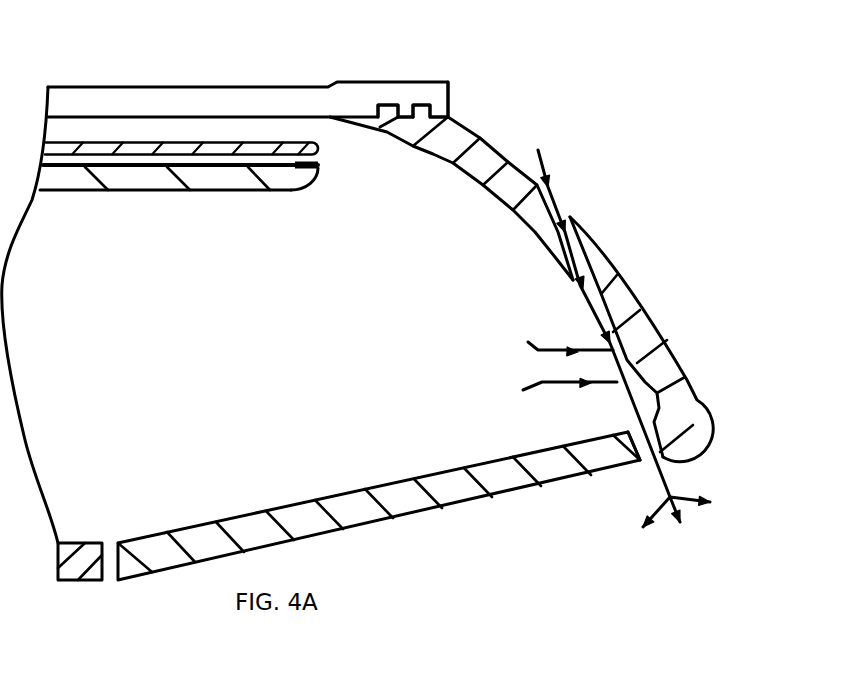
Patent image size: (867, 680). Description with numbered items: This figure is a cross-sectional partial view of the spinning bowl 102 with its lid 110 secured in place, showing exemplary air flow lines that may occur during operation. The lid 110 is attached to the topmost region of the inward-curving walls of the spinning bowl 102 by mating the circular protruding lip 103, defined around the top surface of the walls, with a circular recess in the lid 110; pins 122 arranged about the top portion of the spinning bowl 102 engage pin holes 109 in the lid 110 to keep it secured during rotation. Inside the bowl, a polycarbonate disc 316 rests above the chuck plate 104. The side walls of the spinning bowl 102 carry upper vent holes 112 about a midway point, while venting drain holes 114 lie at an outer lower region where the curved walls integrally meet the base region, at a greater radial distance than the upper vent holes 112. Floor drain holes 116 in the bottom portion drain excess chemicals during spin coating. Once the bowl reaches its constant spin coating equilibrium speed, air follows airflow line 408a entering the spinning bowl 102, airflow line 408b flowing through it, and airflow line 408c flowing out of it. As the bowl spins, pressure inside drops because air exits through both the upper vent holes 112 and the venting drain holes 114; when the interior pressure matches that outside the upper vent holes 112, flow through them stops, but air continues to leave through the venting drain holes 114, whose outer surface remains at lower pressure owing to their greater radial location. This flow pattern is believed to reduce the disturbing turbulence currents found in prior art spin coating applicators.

The lid 110 is at (343, 100).
The circular protruding lip 103 is at (382, 100).
The pin holes 109 is at (430, 88).
The pins 122 is at (423, 105).
The polycarbonate disc 316 is at (320, 143).
The chuck plate 104 is at (248, 172).
The spinning bowl 102 is at (490, 160).
The upper vent holes 112 is at (567, 213).
The airflow line 408a is at (538, 147).
The airflow line 408b is at (523, 390).
The airflow line 408c is at (680, 522).
The venting drain holes 114 is at (642, 470).
The floor drain holes 116 is at (118, 583).